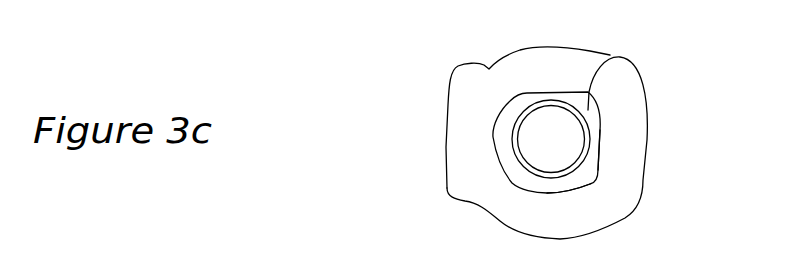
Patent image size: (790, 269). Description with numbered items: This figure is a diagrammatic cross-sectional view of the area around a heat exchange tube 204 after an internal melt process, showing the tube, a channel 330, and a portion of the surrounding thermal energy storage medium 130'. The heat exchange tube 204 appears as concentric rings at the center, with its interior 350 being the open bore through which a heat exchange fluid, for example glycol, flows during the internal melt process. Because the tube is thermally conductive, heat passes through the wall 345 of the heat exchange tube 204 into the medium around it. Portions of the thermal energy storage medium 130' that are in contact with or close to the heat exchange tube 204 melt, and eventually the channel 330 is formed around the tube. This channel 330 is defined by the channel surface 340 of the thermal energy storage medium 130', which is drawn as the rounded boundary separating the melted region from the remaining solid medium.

The heat exchange tube 204 is at (556, 96).
The channel 330 is at (590, 52).
The thermal energy storage medium 130' is at (592, 143).
The channel surface 340 is at (600, 163).
The wall 345 is at (593, 183).
The interior 350 is at (545, 149).